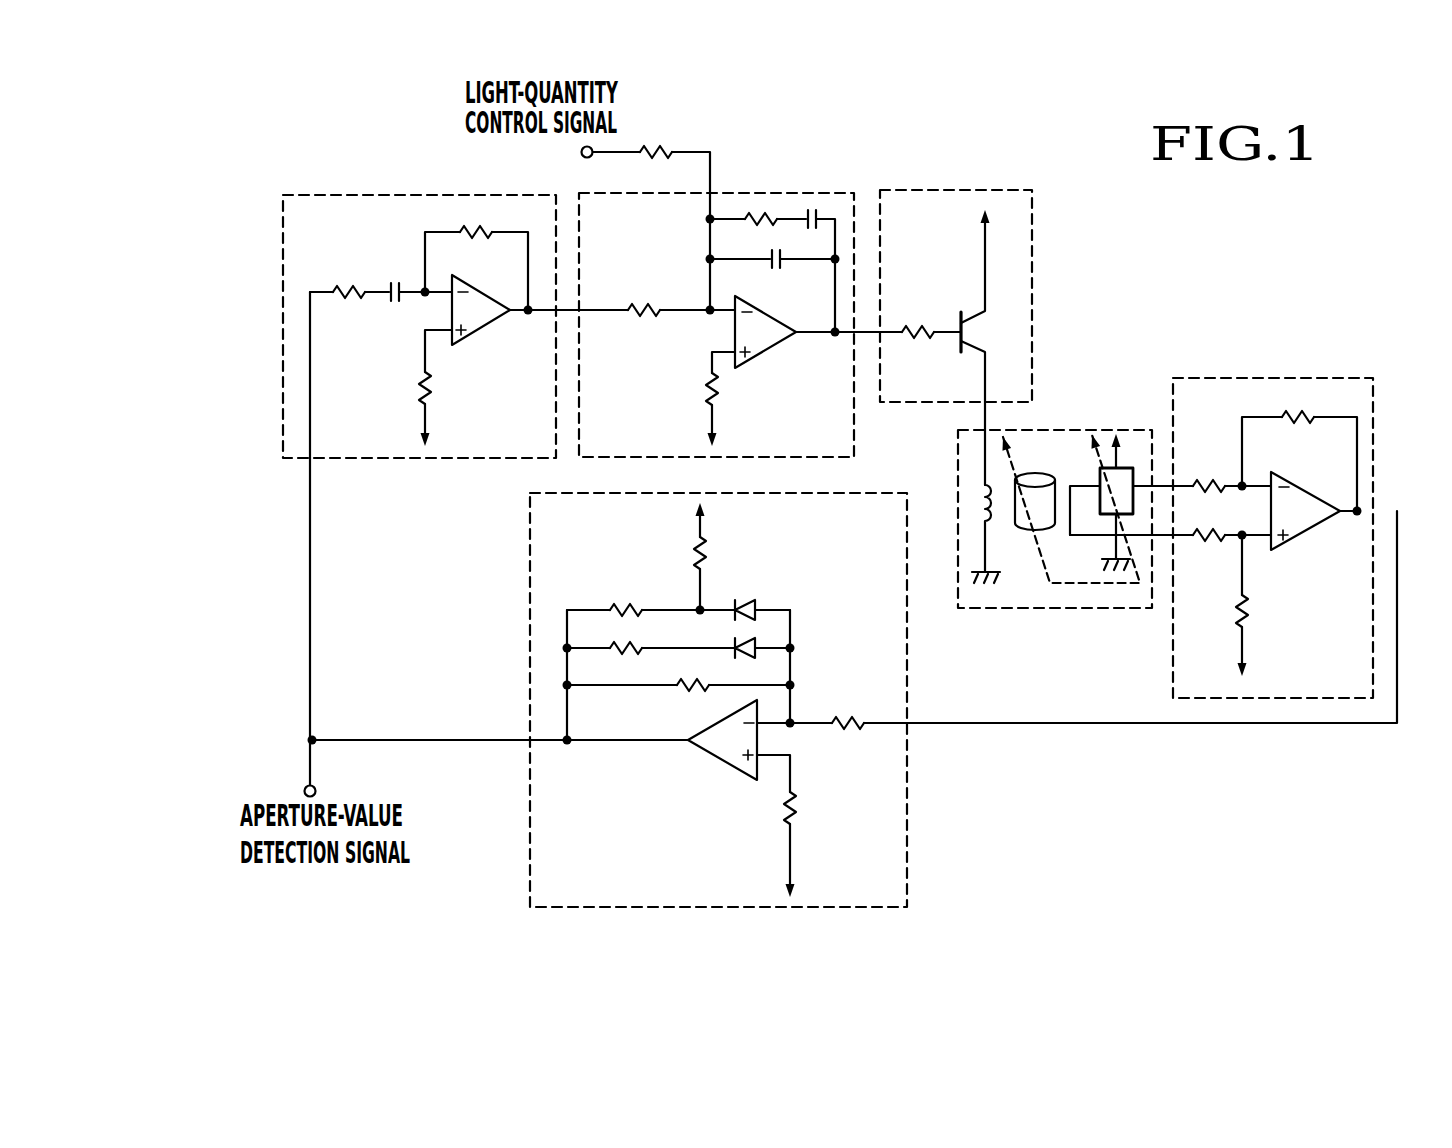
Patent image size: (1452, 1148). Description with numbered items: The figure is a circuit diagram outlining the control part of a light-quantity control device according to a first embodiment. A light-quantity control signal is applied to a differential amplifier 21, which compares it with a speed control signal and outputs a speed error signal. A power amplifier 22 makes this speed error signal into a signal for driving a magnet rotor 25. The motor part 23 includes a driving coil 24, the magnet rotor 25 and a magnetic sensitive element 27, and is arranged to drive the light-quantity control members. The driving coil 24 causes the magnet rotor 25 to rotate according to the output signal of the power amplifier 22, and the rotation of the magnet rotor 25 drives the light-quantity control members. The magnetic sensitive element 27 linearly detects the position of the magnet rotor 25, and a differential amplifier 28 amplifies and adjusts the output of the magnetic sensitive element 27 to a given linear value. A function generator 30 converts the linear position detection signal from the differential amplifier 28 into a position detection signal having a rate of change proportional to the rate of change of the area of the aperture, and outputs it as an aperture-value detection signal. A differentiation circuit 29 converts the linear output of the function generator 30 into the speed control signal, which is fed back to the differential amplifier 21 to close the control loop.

The differential amplifier 21 is at (827, 193).
The power amplifier 22 is at (1012, 190).
The motor part 23 is at (1035, 518).
The driving coil 24 is at (985, 500).
The magnet rotor 25 is at (1048, 525).
The magnetic sensitive element 27 is at (1130, 478).
The differential amplifier 28 is at (1330, 378).
The differentiation circuit 29 is at (300, 195).
The function generator 30 is at (530, 682).